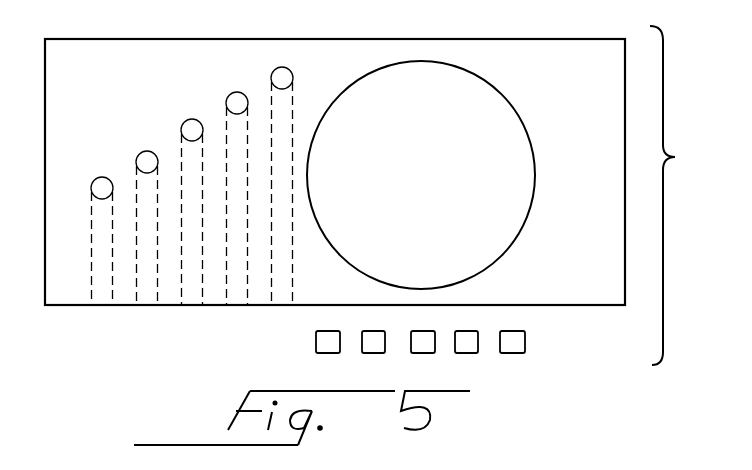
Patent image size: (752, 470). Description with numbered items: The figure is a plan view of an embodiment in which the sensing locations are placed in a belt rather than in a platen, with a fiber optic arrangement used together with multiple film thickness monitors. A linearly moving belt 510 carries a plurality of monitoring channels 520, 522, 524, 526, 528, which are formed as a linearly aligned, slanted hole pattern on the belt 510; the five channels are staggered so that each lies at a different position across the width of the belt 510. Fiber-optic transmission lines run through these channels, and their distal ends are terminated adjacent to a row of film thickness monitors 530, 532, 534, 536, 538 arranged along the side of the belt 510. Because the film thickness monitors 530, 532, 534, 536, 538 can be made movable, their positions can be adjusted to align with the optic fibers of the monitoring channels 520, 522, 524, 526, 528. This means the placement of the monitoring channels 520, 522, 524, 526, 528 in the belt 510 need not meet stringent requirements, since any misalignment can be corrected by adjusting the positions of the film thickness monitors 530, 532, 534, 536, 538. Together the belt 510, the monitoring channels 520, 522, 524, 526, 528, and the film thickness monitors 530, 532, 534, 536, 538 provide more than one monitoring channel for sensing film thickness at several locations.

The belt 510 is at (582, 293).
The monitoring channel 520 is at (102, 177).
The monitoring channel 522 is at (147, 151).
The monitoring channel 524 is at (192, 119).
The monitoring channel 526 is at (237, 92).
The monitoring channel 528 is at (282, 67).
The film thickness monitor 530 is at (329, 353).
The film thickness monitor 532 is at (375, 353).
The film thickness monitor 534 is at (411, 348).
The film thickness monitor 536 is at (462, 353).
The film thickness monitor 538 is at (519, 353).